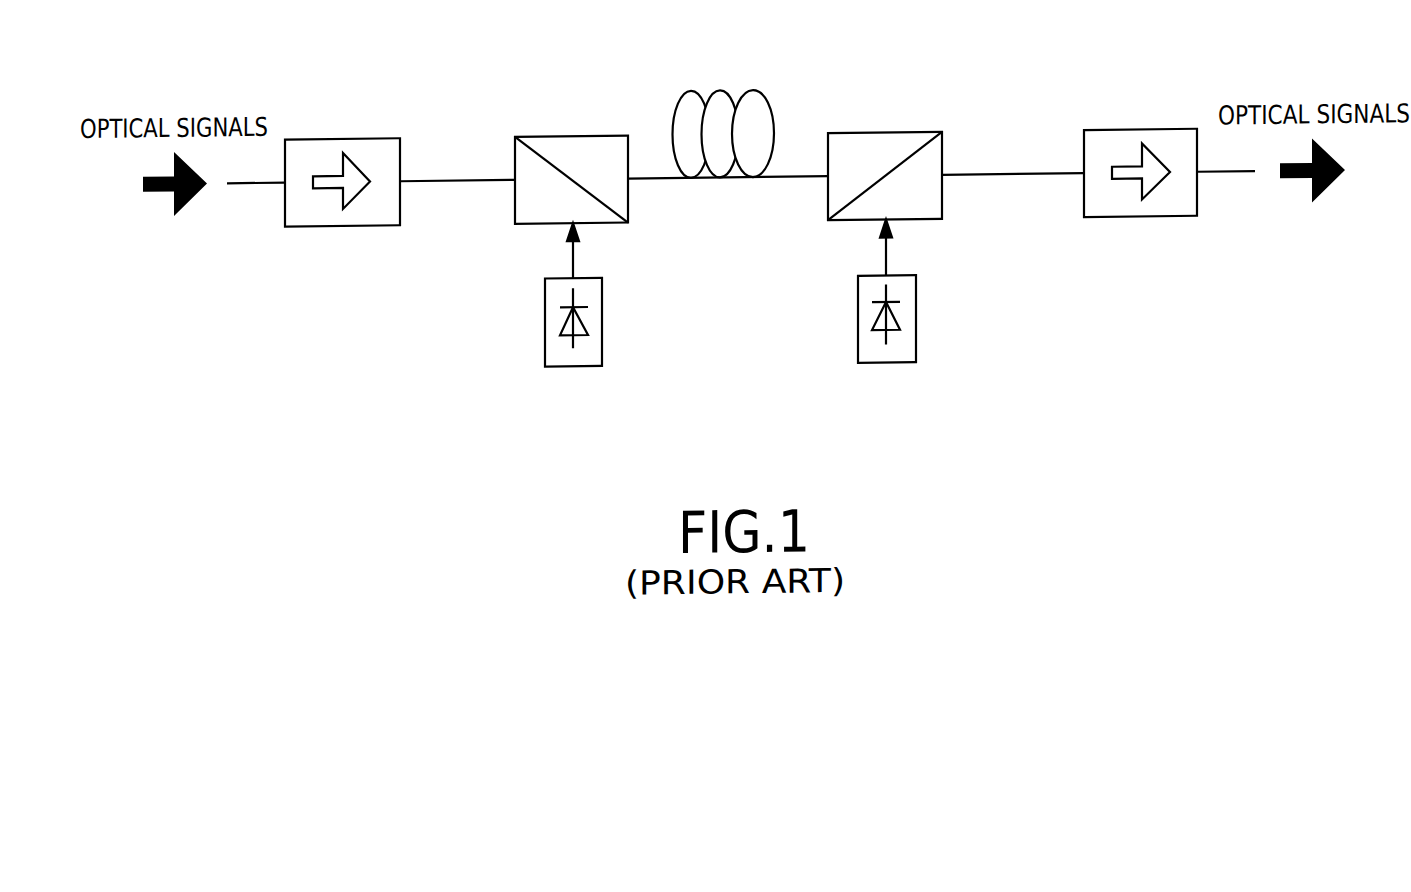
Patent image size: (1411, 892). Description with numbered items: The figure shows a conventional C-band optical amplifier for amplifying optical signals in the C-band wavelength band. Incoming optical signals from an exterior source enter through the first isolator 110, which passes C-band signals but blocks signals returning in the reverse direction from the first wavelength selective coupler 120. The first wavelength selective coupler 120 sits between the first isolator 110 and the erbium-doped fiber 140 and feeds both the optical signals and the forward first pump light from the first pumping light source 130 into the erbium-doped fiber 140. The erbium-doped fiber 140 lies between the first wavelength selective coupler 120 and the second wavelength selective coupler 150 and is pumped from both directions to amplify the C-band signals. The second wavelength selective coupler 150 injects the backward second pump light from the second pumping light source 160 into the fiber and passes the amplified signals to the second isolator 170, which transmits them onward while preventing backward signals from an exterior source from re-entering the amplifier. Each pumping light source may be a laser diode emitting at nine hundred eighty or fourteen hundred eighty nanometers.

The first isolator 110 is at (342, 143).
The first wavelength selective coupler 120 is at (572, 143).
The first pumping light source 130 is at (602, 327).
The erbium-doped fiber 140 is at (753, 99).
The second wavelength selective coupler 150 is at (885, 143).
The second pumping light source 160 is at (916, 328).
The second isolator 170 is at (1145, 143).